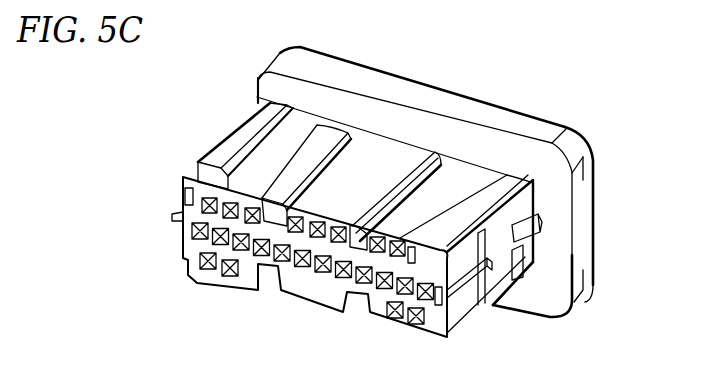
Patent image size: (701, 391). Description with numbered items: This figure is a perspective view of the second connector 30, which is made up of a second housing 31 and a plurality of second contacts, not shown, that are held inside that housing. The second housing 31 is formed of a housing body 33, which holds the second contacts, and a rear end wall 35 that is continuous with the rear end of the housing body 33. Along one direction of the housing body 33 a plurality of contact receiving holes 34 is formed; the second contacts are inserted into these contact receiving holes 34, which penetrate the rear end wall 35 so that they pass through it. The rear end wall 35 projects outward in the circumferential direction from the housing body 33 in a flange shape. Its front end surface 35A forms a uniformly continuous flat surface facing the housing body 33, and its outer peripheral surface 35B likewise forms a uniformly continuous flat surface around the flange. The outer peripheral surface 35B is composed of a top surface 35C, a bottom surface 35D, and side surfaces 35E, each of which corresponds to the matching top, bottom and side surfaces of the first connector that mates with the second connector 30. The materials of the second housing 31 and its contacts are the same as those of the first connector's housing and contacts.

The second connector 30 is at (577, 93).
The second housing 31 is at (314, 299).
The housing body 33 is at (221, 132).
The contact receiving holes 34 is at (238, 280).
The rear end wall 35 is at (596, 235).
The front end surface 35A is at (540, 302).
The outer peripheral surface 35B is at (407, 84).
The top surface 35C is at (512, 118).
The bottom surface 35D is at (510, 308).
The side surfaces 35E is at (590, 280).